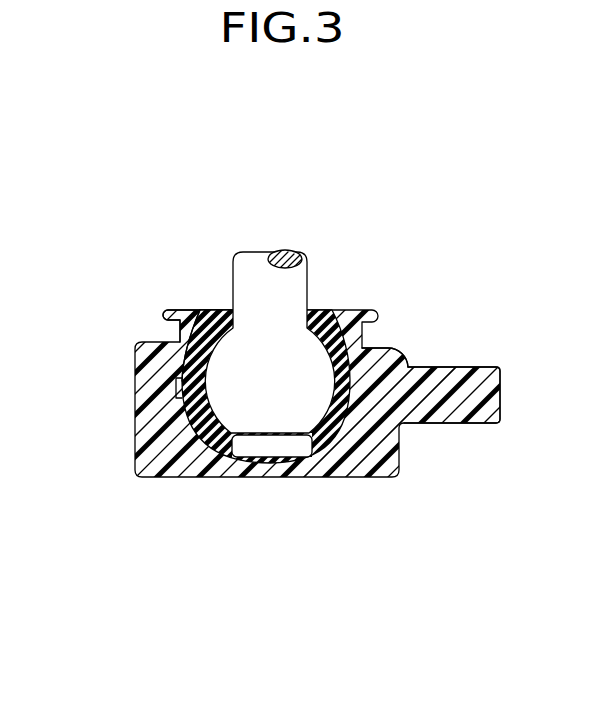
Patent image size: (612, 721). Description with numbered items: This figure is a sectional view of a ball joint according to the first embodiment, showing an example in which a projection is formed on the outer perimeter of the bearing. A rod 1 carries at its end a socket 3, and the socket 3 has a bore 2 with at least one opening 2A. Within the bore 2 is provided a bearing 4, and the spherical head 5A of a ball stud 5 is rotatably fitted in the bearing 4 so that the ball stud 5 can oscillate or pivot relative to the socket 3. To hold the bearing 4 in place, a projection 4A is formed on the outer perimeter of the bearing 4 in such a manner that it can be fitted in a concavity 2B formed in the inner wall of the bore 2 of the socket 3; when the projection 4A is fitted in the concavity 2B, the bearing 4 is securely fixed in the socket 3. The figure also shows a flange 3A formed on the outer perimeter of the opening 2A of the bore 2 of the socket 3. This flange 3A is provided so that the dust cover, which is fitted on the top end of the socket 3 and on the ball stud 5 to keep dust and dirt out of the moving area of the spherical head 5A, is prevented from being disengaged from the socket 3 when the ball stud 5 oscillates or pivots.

The rod 1 is at (482, 415).
The bore 2 is at (205, 440).
The opening 2A is at (218, 318).
The concavity 2B is at (177, 400).
The socket 3 is at (366, 448).
The flange 3A is at (160, 313).
The bearing 4 is at (333, 457).
The projection 4A is at (397, 352).
The ball stud 5 is at (318, 289).
The spherical head 5A is at (265, 400).